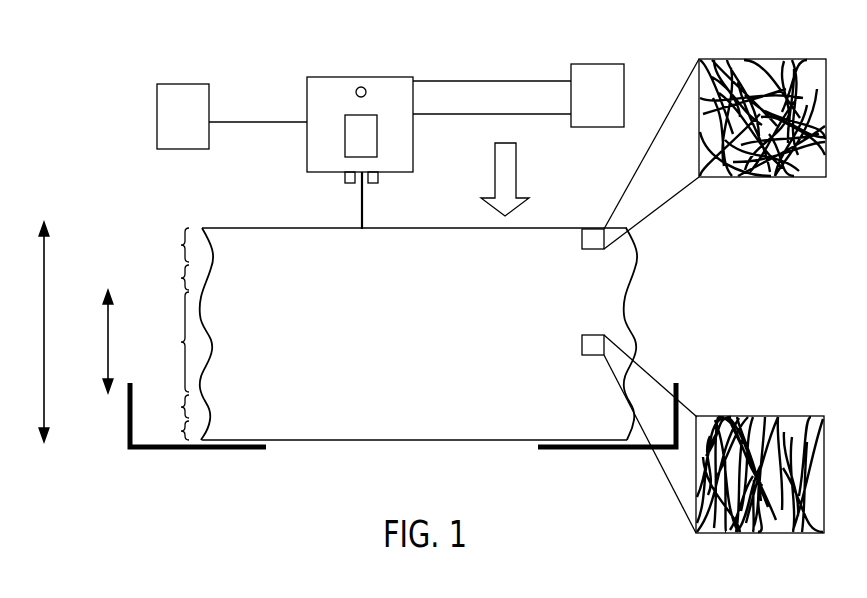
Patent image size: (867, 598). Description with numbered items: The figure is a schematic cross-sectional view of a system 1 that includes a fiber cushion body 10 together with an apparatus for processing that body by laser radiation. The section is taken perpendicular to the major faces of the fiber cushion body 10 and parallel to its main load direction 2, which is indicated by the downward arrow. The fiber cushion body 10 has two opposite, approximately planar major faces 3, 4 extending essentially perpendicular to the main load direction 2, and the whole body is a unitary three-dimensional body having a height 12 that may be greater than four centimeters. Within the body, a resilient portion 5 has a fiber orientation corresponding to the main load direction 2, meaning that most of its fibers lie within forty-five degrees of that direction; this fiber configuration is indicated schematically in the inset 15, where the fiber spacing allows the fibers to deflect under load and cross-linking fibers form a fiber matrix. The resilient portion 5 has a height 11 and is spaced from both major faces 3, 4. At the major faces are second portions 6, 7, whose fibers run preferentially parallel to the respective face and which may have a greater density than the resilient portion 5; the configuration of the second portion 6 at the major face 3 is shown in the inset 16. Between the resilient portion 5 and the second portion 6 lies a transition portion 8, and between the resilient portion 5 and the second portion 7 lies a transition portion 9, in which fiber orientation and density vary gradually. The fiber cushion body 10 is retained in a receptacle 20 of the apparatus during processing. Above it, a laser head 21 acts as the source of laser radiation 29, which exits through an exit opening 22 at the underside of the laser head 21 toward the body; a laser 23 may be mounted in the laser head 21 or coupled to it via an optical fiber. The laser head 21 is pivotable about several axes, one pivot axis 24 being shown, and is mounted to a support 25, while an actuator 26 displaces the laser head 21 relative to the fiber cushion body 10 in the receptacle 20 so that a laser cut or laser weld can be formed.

The system 1 is at (122, 43).
The main load direction 2 is at (517, 170).
The major face 3 is at (230, 228).
The major face 4 is at (237, 450).
The resilient portion 5 is at (174, 342).
The second portion 6 is at (174, 245).
The second portion 7 is at (174, 429).
The transition portion 8 is at (174, 278).
The transition portion 9 is at (174, 404).
The fiber cushion body 10 is at (197, 222).
The height of resilient portion 11 is at (108, 340).
The height of fiber cushion body 12 is at (44, 340).
The inset 15 is at (825, 416).
The inset 16 is at (826, 59).
The receptacle 20 is at (572, 450).
The laser head 21 is at (290, 78).
The nozzles 22 is at (350, 184).
The laser 23 is at (376, 133).
The pivot axis 24 is at (363, 87).
The support 25 is at (493, 81).
The actuator 26 is at (597, 64).
The laser radiation 29 is at (183, 84).